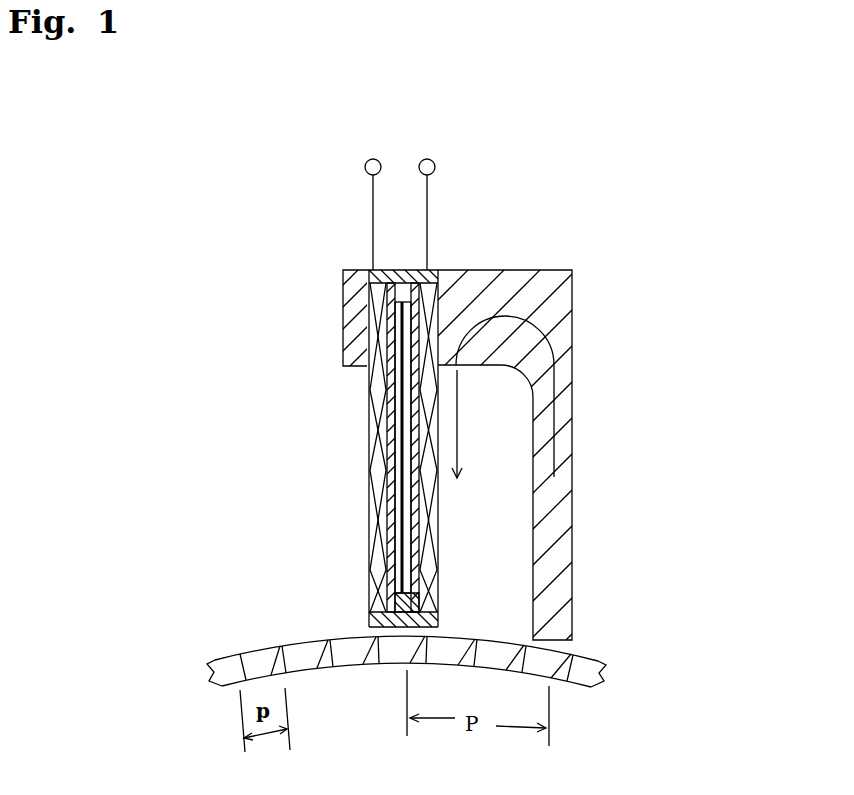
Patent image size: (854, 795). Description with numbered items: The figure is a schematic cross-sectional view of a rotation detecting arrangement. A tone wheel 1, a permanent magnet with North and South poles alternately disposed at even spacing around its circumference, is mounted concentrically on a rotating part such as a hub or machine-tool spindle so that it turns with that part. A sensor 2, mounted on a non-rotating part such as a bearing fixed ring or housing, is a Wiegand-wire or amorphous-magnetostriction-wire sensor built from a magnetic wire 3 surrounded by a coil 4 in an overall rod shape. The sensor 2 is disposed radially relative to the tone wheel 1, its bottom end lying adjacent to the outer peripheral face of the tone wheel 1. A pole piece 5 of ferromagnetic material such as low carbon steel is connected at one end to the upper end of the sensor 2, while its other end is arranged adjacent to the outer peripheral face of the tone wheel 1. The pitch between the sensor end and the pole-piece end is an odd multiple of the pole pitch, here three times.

The tone wheel 1 is at (574, 650).
The sensor 2 is at (431, 302).
The magnetic wire 3 is at (403, 340).
The coil 4 is at (370, 449).
The pole piece 5 is at (567, 412).